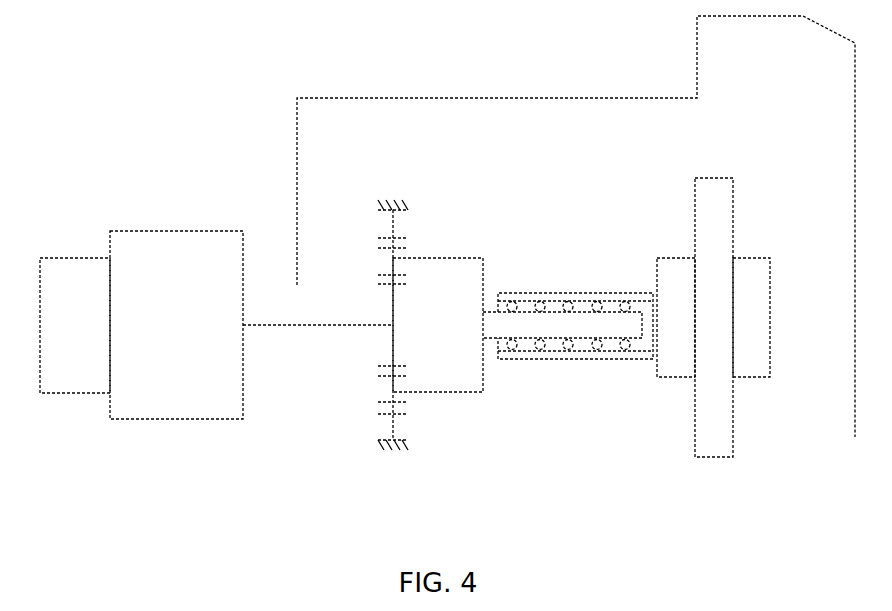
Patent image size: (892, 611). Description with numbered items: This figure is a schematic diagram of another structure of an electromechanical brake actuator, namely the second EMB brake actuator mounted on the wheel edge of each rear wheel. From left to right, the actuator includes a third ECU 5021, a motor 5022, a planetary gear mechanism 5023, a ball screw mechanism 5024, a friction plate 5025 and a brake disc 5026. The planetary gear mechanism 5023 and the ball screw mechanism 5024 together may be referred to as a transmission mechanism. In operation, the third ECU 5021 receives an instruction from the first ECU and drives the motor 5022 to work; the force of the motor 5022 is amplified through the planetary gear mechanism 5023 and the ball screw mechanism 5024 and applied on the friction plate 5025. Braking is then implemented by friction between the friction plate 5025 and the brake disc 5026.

The third ECU 5021 is at (77, 258).
The motor 5022 is at (177, 231).
The planetary gear mechanism 5023 is at (385, 377).
The ball screw mechanism 5024 is at (633, 293).
The friction plate 5025 is at (770, 377).
The brake disc 5026 is at (733, 457).